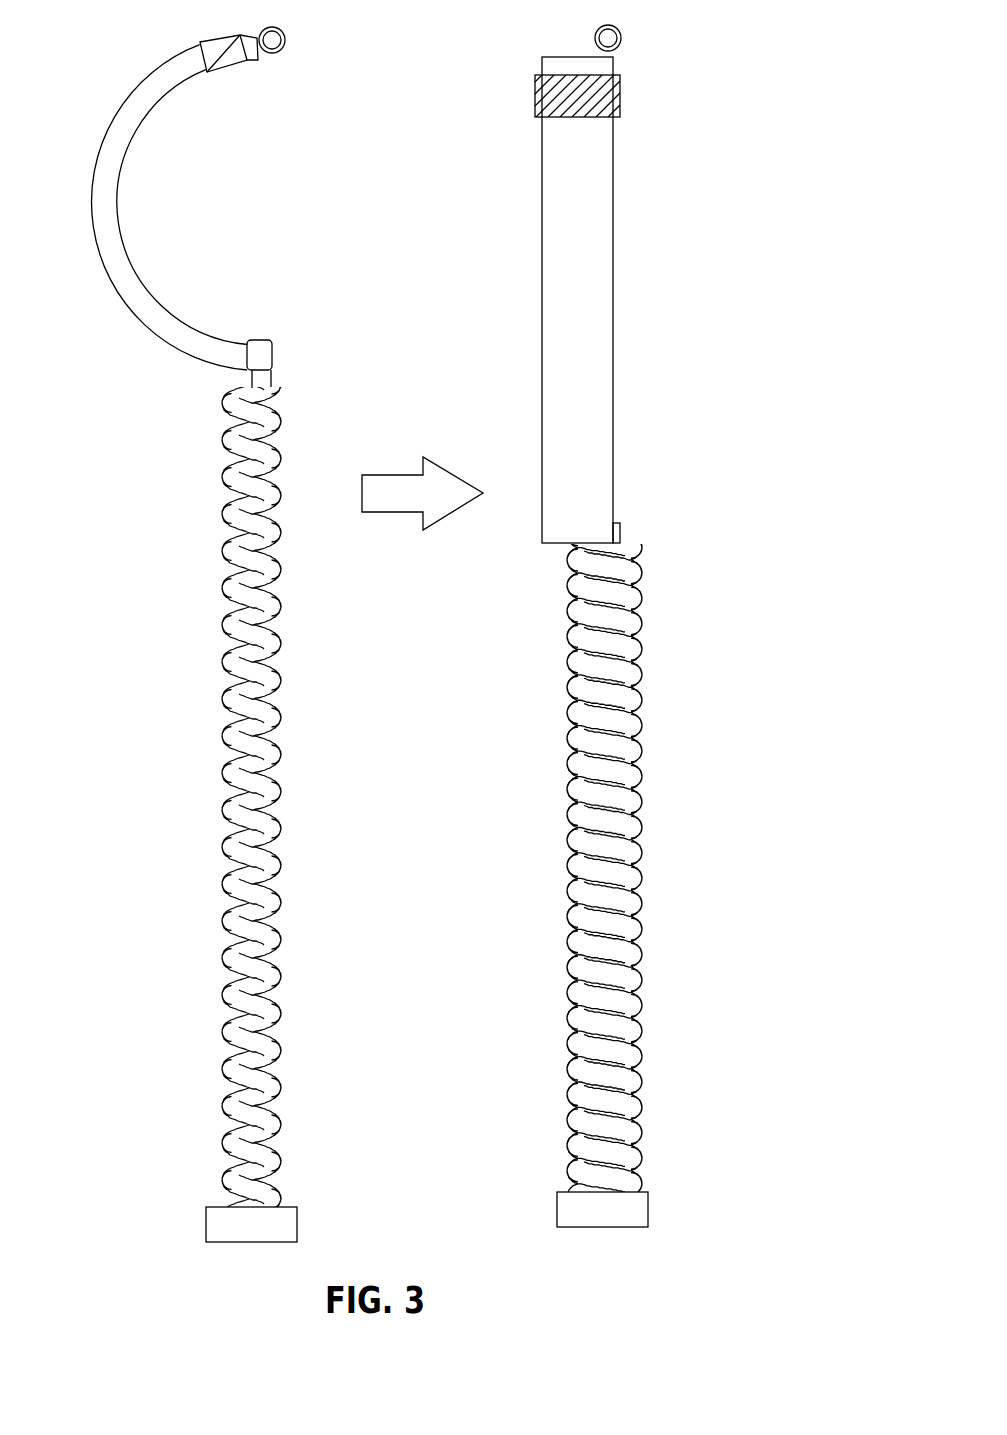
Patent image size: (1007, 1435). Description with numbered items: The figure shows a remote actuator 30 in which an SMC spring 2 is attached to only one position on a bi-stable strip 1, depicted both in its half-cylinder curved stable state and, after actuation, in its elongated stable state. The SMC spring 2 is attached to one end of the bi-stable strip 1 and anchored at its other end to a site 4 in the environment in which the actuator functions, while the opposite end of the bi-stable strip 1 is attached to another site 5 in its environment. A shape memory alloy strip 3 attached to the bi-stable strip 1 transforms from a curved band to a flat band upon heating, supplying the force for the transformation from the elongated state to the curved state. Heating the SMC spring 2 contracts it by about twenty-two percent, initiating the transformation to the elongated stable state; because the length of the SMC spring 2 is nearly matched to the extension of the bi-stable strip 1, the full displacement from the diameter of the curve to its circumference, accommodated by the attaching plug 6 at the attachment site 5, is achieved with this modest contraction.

The remote actuator 30 is at (104, 102).
The bi-stable strip 1 is at (105, 183).
The SMC spring 2 is at (227, 477).
The shape memory alloy (SMA) strip 3 is at (227, 65).
The site 4 is at (282, 1225).
The site 5 is at (275, 40).
The attaching plug 6 is at (260, 343).